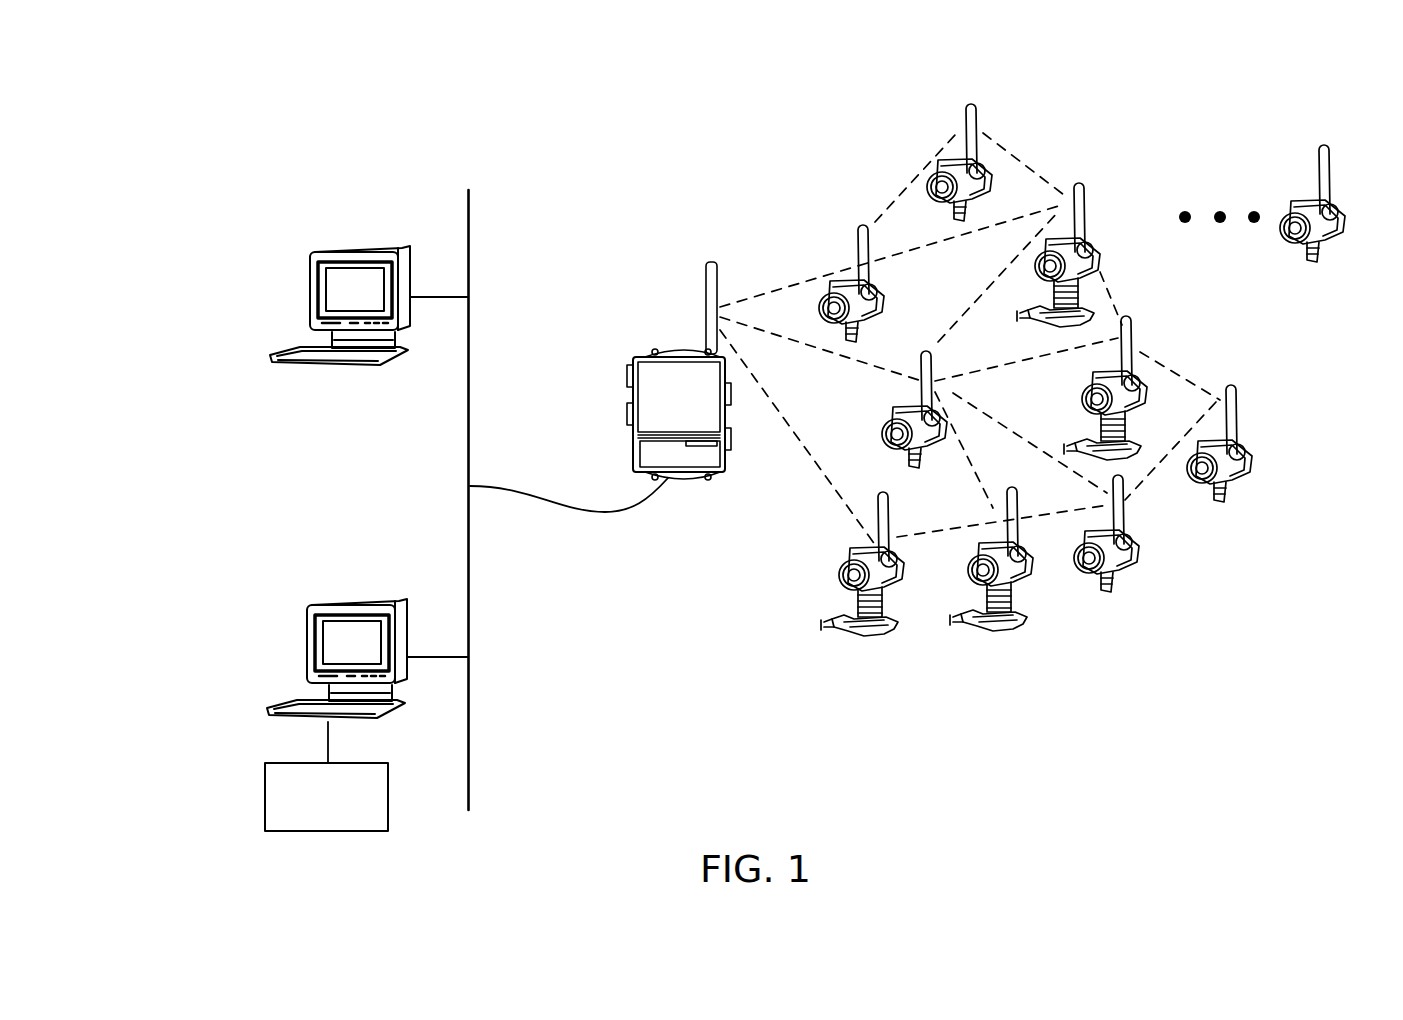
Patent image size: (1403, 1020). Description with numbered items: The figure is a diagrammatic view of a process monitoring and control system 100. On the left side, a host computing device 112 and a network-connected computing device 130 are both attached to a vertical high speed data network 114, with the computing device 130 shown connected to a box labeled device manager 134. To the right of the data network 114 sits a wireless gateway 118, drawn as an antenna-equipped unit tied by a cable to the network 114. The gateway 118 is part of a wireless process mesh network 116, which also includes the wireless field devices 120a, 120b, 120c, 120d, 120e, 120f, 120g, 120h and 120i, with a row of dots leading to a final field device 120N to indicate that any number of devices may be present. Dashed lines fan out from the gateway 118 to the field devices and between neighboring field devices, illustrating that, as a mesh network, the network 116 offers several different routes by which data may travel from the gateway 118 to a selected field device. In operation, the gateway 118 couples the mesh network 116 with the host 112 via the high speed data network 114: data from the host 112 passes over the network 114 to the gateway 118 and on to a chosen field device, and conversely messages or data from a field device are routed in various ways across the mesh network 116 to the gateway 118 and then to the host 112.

The process monitoring and control system 100 is at (694, 131).
The host computing device 112 is at (307, 285).
The high speed data network 114 is at (471, 237).
The wireless process mesh network 116 is at (783, 606).
The wireless gateway 118 is at (627, 398).
The wireless field device 120a is at (881, 300).
The wireless field device 120b is at (925, 433).
The wireless field device 120c is at (882, 587).
The wireless field device 120d is at (968, 186).
The wireless field device 120e is at (1013, 570).
The wireless field device 120f is at (1085, 262).
The wireless field device 120g is at (1113, 397).
The wireless field device 120h is at (1117, 557).
The wireless field device 120i is at (1230, 467).
The wireless field device 120N is at (1323, 230).
The network-connected computing device 130 is at (292, 631).
The device manager 134 is at (218, 786).